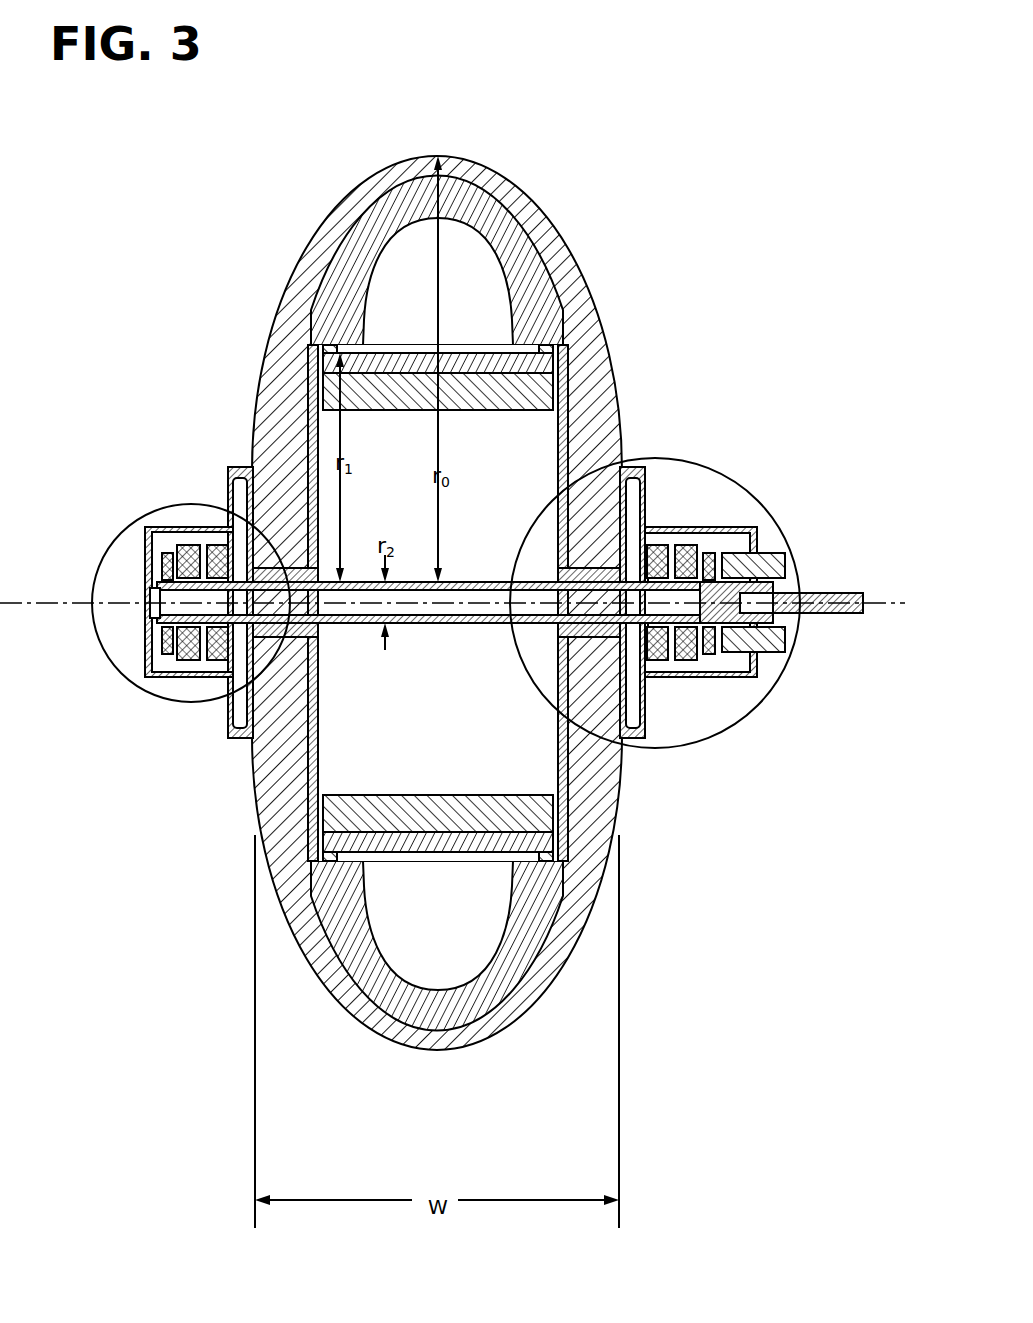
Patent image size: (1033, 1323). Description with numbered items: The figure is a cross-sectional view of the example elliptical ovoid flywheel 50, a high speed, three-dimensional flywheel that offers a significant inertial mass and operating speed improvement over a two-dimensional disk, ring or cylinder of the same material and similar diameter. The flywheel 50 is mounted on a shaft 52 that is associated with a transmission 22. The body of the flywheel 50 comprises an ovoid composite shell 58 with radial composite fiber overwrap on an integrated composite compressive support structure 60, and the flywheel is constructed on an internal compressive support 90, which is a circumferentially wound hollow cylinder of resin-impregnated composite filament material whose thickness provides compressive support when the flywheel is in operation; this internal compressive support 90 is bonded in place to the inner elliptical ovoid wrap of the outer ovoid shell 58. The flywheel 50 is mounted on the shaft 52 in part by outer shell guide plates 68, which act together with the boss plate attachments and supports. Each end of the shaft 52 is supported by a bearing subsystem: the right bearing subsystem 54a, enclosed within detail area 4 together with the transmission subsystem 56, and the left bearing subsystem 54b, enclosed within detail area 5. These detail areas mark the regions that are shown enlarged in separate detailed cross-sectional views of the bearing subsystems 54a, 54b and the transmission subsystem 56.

The elliptical ovoid flywheel 50 is at (684, 184).
The ovoid composite shell 58 is at (255, 790).
The internal compressive support 90 is at (385, 290).
The integrated composite compressive support structure 60 is at (458, 410).
The outer shell guide plates 68 is at (547, 440).
The shaft 52 is at (462, 582).
The transmission 22 is at (835, 592).
The right bearing subsystem 54a is at (748, 515).
The left bearing subsystem 54b is at (190, 522).
The transmission subsystem 56 is at (777, 542).
The detail area 4 is at (722, 470).
The detail area 5 is at (108, 545).